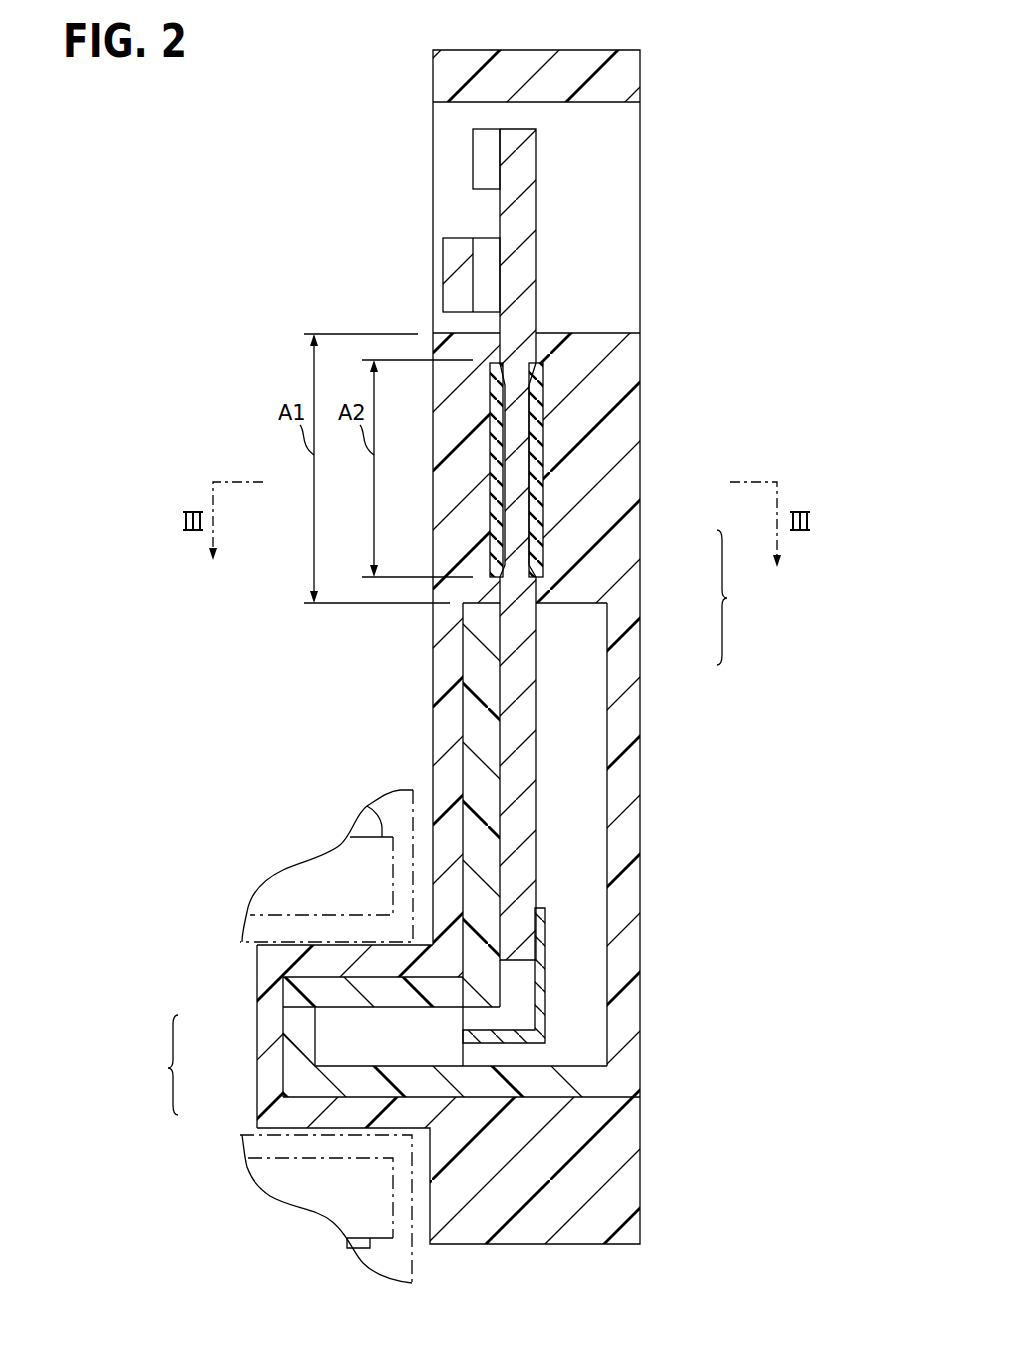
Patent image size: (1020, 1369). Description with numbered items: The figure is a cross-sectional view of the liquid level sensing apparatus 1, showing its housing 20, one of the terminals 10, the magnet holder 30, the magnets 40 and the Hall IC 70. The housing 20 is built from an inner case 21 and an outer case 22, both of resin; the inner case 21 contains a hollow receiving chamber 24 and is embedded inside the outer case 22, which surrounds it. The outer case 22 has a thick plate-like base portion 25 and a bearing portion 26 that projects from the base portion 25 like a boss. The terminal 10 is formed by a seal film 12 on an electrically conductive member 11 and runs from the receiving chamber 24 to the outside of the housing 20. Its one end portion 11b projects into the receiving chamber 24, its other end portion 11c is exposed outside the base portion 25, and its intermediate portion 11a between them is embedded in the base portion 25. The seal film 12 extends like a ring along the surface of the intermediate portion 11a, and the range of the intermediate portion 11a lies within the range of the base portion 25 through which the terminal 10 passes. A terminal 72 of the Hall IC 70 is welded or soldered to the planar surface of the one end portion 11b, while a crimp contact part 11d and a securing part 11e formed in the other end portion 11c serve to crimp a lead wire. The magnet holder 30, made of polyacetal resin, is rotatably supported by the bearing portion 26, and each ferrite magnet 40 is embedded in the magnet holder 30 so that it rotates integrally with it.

The liquid level sensing apparatus 1 is at (370, 83).
The terminal 10 is at (552, 544).
The electrically conductive member 11 is at (541, 544).
The intermediate portion 11a is at (517, 476).
The one end portion 11b is at (515, 870).
The other end portion 11c is at (523, 209).
The crimp contact part 11d is at (453, 238).
The securing part 11e is at (473, 152).
The seal film 12 is at (537, 502).
The housing 20 is at (371, 1036).
The inner case 21 is at (293, 1077).
The outer case 22 is at (270, 1050).
The receiving chamber 24 is at (503, 1067).
The base portion 25 is at (447, 677).
The bearing portion 26 is at (285, 952).
The magnet holder 30 is at (412, 1230).
The magnet 40 is at (360, 804).
The Hall IC 70 is at (337, 1025).
The terminal of Hall IC 72 is at (545, 1025).